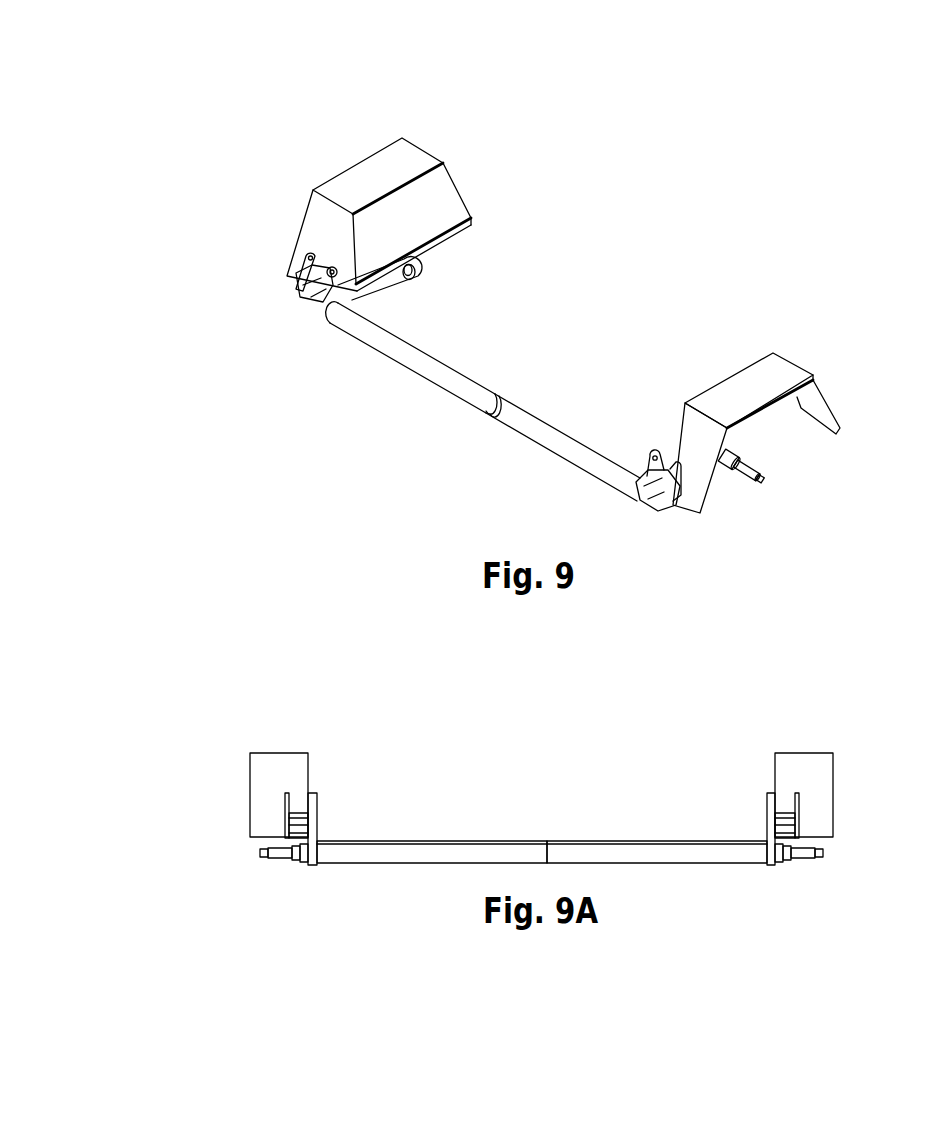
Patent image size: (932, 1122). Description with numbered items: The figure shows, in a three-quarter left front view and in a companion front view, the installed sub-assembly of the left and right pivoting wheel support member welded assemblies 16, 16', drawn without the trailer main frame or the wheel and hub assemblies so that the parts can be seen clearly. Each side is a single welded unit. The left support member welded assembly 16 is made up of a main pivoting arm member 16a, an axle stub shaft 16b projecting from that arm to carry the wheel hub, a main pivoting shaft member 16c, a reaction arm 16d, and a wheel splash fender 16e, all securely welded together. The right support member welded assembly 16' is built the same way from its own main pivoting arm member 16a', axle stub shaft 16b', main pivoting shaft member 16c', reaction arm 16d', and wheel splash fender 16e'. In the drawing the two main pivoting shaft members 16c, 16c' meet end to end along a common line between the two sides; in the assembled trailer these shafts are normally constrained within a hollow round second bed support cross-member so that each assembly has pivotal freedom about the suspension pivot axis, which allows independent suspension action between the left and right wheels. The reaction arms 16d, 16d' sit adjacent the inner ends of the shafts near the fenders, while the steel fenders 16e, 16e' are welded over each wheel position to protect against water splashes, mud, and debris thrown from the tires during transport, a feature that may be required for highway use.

In FIG. 9, the left support member welded assembly 16 is at (697, 556).
In FIG. 9A, the left support member welded assembly 16 is at (813, 899).
In FIG. 9, the right support member welded assembly 16' is at (231, 325).
In FIG. 9A, the right support member welded assembly 16' is at (270, 900).
In FIG. 9, the main pivoting arm member 16a is at (728, 480).
In FIG. 9A, the main pivoting arm member 16a is at (737, 853).
In FIG. 9, the main pivoting arm member 16a' is at (411, 298).
In FIG. 9A, the main pivoting arm member 16a' is at (355, 852).
In FIG. 9, the axle stub shaft 16b is at (773, 488).
In FIG. 9A, the axle stub shaft 16b is at (836, 872).
In FIG. 9, the axle stub shaft 16b' is at (456, 284).
In FIG. 9A, the axle stub shaft 16b' is at (249, 874).
In FIG. 9, the main pivoting shaft member 16c is at (544, 447).
In FIG. 9A, the main pivoting shaft member 16c is at (657, 827).
In FIG. 9, the main pivoting shaft member 16c' is at (411, 363).
In FIG. 9A, the main pivoting shaft member 16c' is at (432, 827).
In FIG. 9, the reaction arm 16d is at (649, 445).
In FIG. 9A, the reaction arm 16d is at (839, 799).
In FIG. 9, the reaction arm 16d' is at (286, 248).
In FIG. 9A, the reaction arm 16d' is at (240, 801).
In FIG. 9, the wheel splash fender 16e is at (804, 393).
In FIG. 9A, the wheel splash fender 16e is at (847, 777).
In FIG. 9, the wheel splash fender 16e' is at (421, 214).
In FIG. 9A, the wheel splash fender 16e' is at (239, 777).